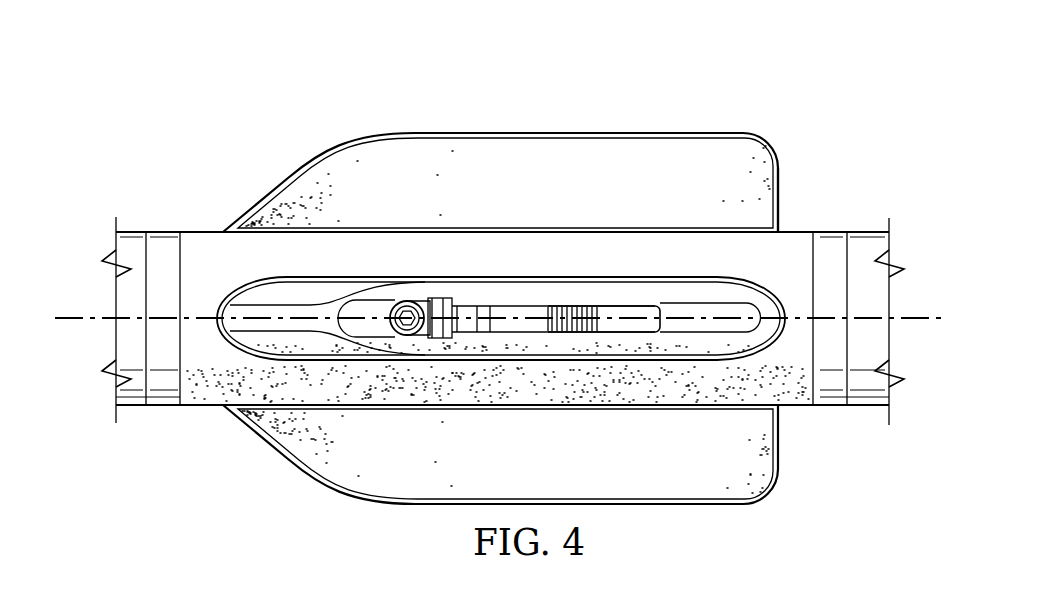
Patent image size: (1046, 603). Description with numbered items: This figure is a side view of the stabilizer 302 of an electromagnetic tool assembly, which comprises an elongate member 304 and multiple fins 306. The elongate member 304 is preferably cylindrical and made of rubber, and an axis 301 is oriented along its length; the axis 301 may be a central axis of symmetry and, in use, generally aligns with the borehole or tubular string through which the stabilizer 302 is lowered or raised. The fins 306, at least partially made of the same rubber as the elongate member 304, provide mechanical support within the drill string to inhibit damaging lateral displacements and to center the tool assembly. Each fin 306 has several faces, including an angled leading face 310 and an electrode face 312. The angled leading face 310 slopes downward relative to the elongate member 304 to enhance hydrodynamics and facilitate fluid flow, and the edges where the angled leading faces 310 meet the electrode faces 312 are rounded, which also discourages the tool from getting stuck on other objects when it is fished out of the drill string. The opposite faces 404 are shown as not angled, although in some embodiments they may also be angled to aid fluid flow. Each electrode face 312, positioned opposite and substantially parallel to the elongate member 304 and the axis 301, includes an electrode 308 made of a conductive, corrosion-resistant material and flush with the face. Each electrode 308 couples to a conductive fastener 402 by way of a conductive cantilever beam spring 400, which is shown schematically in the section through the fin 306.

The axis 301 is at (77, 313).
The stabilizer 302 is at (342, 59).
The elongate member 304 is at (189, 219).
The fin 306 is at (486, 260).
The electrode 308 is at (600, 313).
The angled leading face 310 is at (288, 178).
The electrode face 312 is at (658, 133).
The conductive cantilever beam spring 400 is at (508, 313).
The conductive fastener 402 is at (423, 300).
The face 404 is at (778, 199).